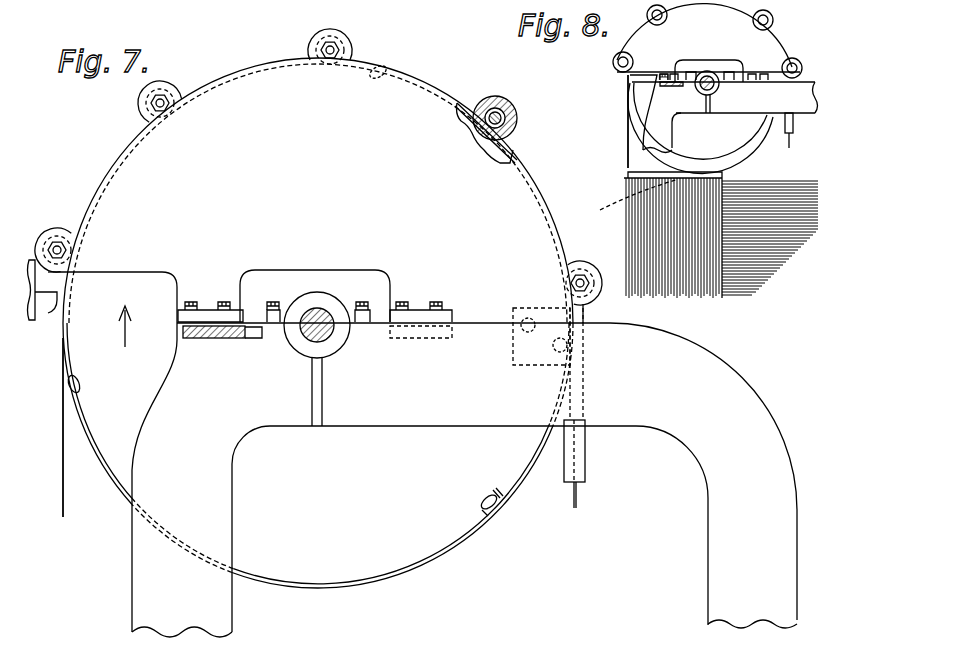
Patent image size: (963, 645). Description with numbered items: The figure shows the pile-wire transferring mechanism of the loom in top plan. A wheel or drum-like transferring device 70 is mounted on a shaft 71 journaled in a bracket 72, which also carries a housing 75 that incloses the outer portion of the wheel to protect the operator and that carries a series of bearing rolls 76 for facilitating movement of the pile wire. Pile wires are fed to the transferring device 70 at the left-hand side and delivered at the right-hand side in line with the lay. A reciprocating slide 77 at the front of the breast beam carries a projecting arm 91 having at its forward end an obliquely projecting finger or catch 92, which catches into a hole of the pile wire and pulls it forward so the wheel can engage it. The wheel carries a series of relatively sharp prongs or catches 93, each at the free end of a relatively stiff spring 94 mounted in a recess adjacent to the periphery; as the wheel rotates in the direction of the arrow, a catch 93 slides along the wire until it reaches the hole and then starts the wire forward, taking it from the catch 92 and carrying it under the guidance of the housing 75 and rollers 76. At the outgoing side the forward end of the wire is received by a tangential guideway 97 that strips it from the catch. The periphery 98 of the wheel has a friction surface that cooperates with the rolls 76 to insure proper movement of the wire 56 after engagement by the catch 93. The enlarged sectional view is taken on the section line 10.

In FIG. 7, the section line 10 is at (512, 476).
In FIG. 7, the intermediate part of the pile wire 56 is at (64, 516).
In FIG. 8, the intermediate part of the pile wire 56 is at (628, 150).
In FIG. 7, the transferring device 70 is at (347, 565).
In FIG. 7, the shaft 71 is at (316, 309).
In FIG. 8, the shaft 71 is at (719, 88).
In FIG. 7, the bracket 72 is at (703, 378).
In FIG. 7, the housing 75 is at (278, 60).
In FIG. 8, the housing 75 is at (788, 40).
In FIG. 7, the bearing rolls 76 is at (172, 88).
In FIG. 7, the slide 77 is at (38, 230).
In FIG. 7, the arm 91 is at (46, 312).
In FIG. 7, the finger or catch 92 is at (68, 281).
In FIG. 7, the prongs or catches 93 is at (492, 515).
In FIG. 7, the spring 94 is at (80, 383).
In FIG. 7, the tangential guideway 97 is at (583, 392).
In FIG. 7, the periphery of the wheel 98 is at (433, 563).